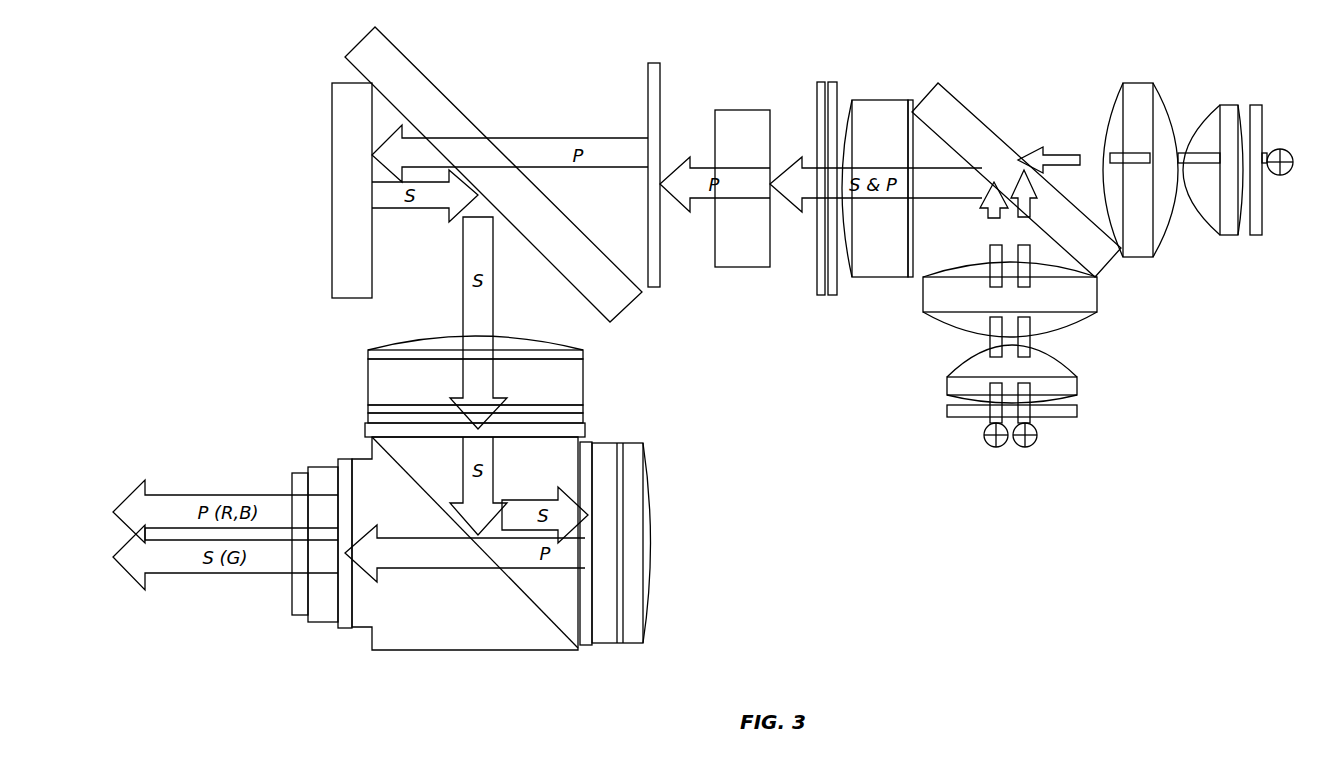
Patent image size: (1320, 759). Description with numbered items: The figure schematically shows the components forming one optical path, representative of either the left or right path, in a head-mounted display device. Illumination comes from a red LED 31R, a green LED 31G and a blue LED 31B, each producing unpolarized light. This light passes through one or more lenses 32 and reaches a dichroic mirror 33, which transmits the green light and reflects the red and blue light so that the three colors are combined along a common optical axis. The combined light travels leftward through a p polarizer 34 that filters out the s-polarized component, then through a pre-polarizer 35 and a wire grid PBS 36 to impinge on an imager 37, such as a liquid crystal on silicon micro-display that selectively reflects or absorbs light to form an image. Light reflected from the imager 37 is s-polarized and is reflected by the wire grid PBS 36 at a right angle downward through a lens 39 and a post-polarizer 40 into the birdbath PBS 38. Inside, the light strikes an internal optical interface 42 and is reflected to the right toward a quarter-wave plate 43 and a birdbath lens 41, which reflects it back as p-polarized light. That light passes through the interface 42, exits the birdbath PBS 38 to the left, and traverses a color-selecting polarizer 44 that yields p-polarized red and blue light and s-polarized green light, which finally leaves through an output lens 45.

The green LED 31G is at (1280, 148).
The red LED 31R is at (987, 445).
The blue LED 31B is at (1032, 445).
The lenses 32 is at (1118, 66).
The dichroic mirror 33 is at (978, 118).
The p polarizer 34 is at (742, 110).
The pre-polarizer 35 is at (660, 77).
The wire grid PBS 36 is at (433, 80).
The imager 37 is at (343, 298).
The birdbath PBS 38 is at (485, 650).
The lens 39 is at (585, 373).
The post-polarizer 40 is at (587, 420).
The birdbath lens 41 is at (647, 578).
The internal optical interface 42 is at (503, 578).
The quarter-wave plate 43 is at (588, 648).
The color-selecting polarizer 44 is at (343, 630).
The output lens 45 is at (300, 615).